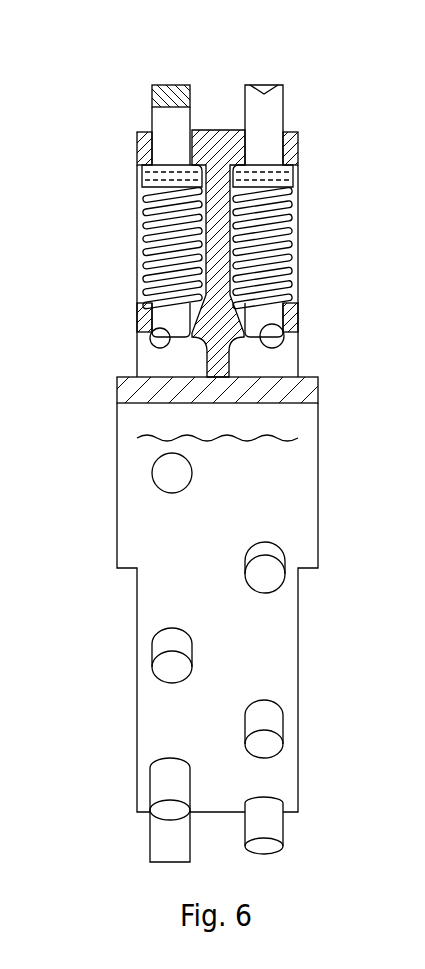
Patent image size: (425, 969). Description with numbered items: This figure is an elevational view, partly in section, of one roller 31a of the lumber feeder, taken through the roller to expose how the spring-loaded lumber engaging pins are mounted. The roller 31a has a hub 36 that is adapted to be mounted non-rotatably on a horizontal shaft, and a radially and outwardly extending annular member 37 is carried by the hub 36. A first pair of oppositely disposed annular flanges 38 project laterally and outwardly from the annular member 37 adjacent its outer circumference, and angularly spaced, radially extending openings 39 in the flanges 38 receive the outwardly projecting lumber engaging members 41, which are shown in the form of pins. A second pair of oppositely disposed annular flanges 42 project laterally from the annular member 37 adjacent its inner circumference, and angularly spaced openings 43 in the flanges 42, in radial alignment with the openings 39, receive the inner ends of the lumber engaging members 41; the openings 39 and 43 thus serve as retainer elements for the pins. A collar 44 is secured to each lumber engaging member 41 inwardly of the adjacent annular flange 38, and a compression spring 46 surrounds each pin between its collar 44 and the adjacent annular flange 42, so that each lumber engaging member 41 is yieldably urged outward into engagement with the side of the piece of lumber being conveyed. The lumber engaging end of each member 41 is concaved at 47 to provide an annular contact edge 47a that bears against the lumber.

The roller 31a is at (262, 632).
The hub 36 is at (318, 393).
The annular member 37 is at (223, 252).
The annular flange 38 is at (137, 145).
The opening 39 is at (156, 137).
The lumber engaging member 41 is at (210, 446).
The annular flange 42 is at (138, 318).
The opening 43 is at (157, 347).
The collar 44 is at (150, 187).
The compression spring 46 is at (148, 242).
The concaved end 47 is at (225, 69).
The annular contact edge 47a is at (225, 74).